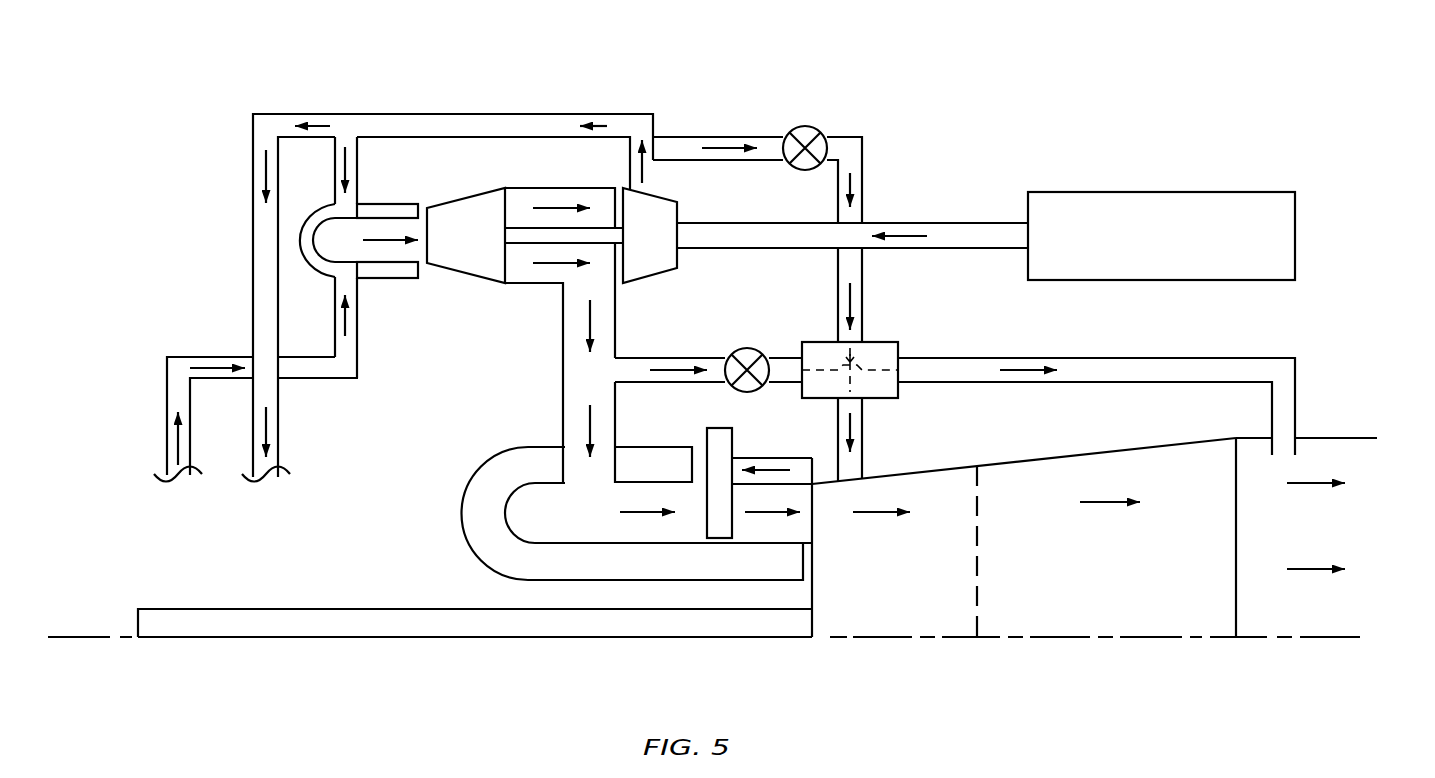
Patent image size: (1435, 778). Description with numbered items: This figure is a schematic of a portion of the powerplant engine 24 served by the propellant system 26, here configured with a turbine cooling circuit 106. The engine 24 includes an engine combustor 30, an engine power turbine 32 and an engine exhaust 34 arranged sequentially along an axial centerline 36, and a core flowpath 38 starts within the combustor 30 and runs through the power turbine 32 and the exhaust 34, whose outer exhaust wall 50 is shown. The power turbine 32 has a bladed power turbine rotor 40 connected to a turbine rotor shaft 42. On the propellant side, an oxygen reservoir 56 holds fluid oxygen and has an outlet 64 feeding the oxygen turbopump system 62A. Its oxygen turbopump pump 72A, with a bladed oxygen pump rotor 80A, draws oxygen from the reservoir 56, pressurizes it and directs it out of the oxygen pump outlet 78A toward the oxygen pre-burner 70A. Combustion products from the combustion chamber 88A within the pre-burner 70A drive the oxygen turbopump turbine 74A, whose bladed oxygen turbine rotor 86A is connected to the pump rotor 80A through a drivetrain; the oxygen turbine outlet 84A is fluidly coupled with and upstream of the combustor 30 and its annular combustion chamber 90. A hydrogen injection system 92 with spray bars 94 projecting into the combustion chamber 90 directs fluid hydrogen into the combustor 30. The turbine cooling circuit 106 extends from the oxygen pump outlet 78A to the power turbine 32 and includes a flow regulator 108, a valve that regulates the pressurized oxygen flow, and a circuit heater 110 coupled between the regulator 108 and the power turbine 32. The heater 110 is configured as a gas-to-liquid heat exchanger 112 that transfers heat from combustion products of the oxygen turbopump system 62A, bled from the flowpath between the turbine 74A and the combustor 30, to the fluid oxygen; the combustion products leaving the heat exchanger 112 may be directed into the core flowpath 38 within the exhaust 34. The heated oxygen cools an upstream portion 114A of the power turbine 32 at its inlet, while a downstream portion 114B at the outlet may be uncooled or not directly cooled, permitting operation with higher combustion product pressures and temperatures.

The powerplant engine 24 is at (1030, 660).
The powerplant propellant system 26 is at (887, 127).
The engine combustor 30 is at (457, 492).
The engine power turbine 32 is at (930, 458).
The engine exhaust 34 is at (1345, 430).
The axial centerline 36 is at (1350, 638).
The core flowpath 38 is at (1418, 535).
The bladed power turbine rotor 40 is at (903, 639).
The turbine rotor shaft 42 is at (363, 608).
The exhaust wall 50 is at (1310, 437).
The oxygen reservoir 56 is at (1135, 190).
The oxygen turbopump system 62A is at (447, 163).
The oxygen reservoir outlet 64 is at (1019, 251).
The oxygen pre-burner 70A is at (386, 287).
The oxygen turbopump pump 72A is at (647, 284).
The oxygen turbopump turbine 74A is at (465, 287).
The oxygen pump outlet 78A is at (654, 196).
The bladed oxygen pump rotor 80A is at (677, 264).
The oxygen turbine outlet 84A is at (512, 283).
The bladed oxygen turbine rotor 86A is at (483, 188).
The combustion chamber 88A is at (320, 253).
The combustion chamber 90 is at (592, 525).
The hydrogen injection system 92 is at (738, 447).
The spray bars 94 is at (705, 520).
The turbine cooling circuit 106 is at (758, 128).
The flow regulator 108 is at (812, 130).
The circuit heater 110 is at (791, 333).
The heat exchanger 112 is at (880, 341).
The upstream portion 114A is at (917, 594).
The downstream portion 114B is at (1110, 589).